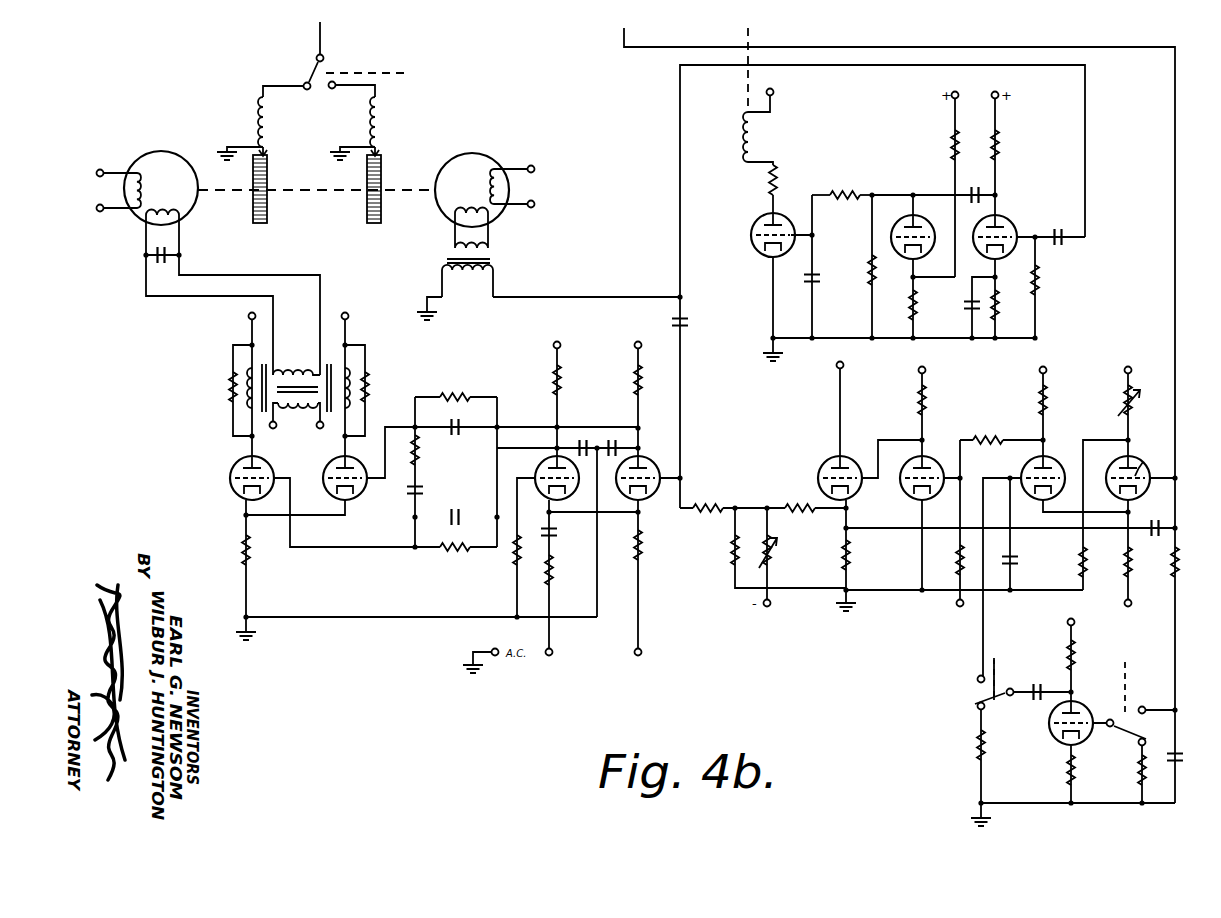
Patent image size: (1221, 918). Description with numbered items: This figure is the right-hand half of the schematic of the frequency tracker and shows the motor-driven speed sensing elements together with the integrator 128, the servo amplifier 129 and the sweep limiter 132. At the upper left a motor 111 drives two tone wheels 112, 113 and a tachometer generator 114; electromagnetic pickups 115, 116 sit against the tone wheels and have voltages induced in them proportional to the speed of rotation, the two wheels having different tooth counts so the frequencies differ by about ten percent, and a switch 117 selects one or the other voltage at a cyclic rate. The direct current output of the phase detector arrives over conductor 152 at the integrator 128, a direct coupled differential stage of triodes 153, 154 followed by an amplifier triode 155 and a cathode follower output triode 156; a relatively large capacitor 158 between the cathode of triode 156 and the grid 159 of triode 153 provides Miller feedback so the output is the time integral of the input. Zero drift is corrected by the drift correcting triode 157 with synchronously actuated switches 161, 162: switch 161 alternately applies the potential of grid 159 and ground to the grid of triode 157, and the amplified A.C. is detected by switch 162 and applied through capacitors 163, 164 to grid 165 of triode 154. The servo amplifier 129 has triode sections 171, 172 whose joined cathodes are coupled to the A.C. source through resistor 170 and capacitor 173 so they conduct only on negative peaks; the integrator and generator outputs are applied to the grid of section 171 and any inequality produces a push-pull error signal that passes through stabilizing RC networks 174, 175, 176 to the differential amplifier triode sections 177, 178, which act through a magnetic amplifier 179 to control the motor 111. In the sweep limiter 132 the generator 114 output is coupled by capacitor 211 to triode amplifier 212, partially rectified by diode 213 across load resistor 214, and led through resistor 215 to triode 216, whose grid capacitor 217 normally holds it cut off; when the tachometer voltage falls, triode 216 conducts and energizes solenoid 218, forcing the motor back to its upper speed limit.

The motor 111 is at (150, 153).
The tone wheel 112 is at (268, 215).
The tone wheel 113 is at (382, 215).
The tachometer generator 114 is at (468, 155).
The electromagnetic pickup 115 is at (258, 113).
The electromagnetic pickup 116 is at (380, 108).
The switch 117 is at (310, 70).
The conductor 152 is at (646, 50).
The sweep limiter 132 is at (882, 137).
The solenoid 218 is at (752, 136).
The resistor 215 is at (838, 190).
The triode 216 is at (752, 224).
The capacitor 217 is at (820, 278).
The load resistor 214 is at (868, 282).
The diode 213 is at (897, 224).
The triode amplifier 212 is at (1020, 212).
The capacitor 211 is at (1058, 244).
The magnetic amplifier 179 is at (296, 368).
The triode section 178 is at (328, 462).
The triode section 177 is at (232, 491).
The stabilizing RC network 175 is at (447, 421).
The stabilizing RC network 176 is at (420, 452).
The stabilizing RC network 174 is at (447, 536).
The triode section 172 is at (536, 470).
The capacitor 173 is at (553, 532).
The resistor 170 is at (553, 570).
The triode section 171 is at (652, 461).
The servo amplifier 129 is at (392, 592).
The cathode follower output triode 156 is at (820, 467).
The amplifier stage triode 155 is at (936, 461).
The grid 165 is at (1010, 478).
The triode 154 is at (1056, 462).
The triode 153 is at (1127, 452).
The grid 159 is at (1154, 459).
The capacitor 164 is at (1018, 560).
The capacitor 158 is at (1155, 538).
The integrator 128 is at (884, 666).
The switch 162 is at (973, 700).
The capacitor 163 is at (1036, 684).
The drift correcting triode 157 is at (1050, 740).
The switch 161 is at (1138, 746).